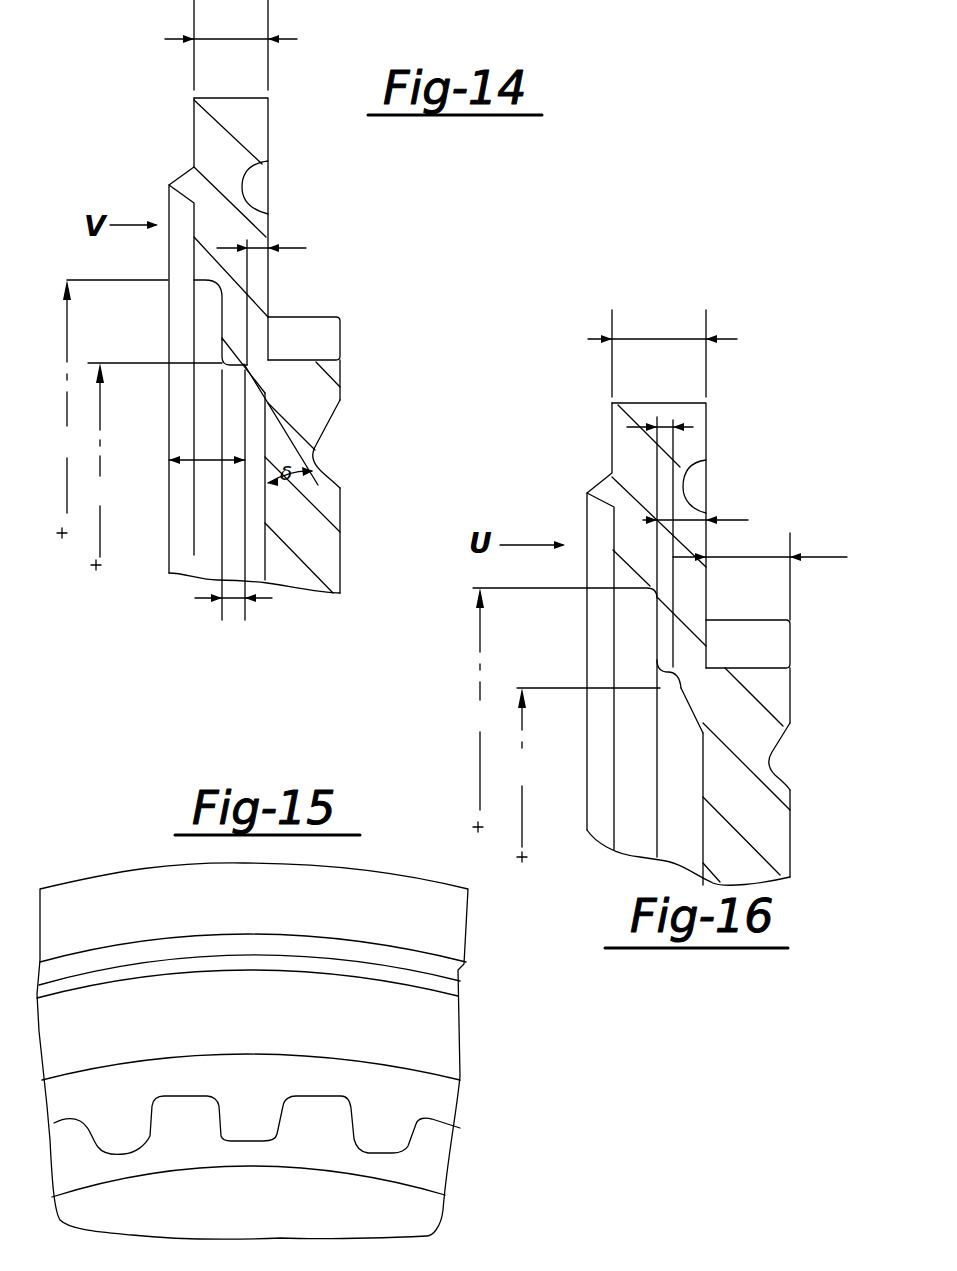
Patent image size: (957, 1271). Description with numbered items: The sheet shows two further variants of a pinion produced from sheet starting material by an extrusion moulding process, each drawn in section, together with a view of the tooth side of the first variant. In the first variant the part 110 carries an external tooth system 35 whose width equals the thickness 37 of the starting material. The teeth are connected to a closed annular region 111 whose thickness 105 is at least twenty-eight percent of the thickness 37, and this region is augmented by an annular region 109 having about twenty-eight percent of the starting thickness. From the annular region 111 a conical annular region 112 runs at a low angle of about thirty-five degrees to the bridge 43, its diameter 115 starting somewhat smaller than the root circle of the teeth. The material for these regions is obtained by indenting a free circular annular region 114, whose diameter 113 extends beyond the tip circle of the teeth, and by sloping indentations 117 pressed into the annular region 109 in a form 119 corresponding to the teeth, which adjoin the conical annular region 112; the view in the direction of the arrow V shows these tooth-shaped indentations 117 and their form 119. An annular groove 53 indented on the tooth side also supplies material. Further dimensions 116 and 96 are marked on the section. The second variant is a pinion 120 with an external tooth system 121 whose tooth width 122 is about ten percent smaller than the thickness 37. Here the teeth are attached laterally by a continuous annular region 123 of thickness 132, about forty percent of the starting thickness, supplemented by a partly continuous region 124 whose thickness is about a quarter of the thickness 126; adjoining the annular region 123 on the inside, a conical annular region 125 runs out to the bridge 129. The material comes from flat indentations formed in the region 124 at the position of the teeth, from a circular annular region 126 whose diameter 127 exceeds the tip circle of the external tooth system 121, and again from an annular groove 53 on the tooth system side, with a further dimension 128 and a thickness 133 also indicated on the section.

In FIG. 14, the starting material thickness 37 is at (218, 38).
In FIG. 16, the starting material thickness 37 is at (642, 338).
In FIG. 14, the annular region thickness 105 is at (267, 237).
In FIG. 14, the bearing race 110 is at (362, 493).
In FIG. 14, the external tooth system 35 is at (303, 327).
In FIG. 14, the annular groove 53 is at (327, 452).
In FIG. 16, the annular groove 53 is at (780, 760).
In FIG. 14, the bridge 43 is at (310, 542).
In FIG. 14, the closed annular region 111 is at (277, 316).
In FIG. 14, the conical annular region 112 is at (267, 367).
In FIG. 14, the free circular annular region 114 is at (210, 293).
In FIG. 14, the annular region 109 is at (235, 320).
In FIG. 14, the diameter of free annular region 113 is at (105, 409).
In FIG. 14, the diameter of conical annular region 115 is at (151, 466).
In FIG. 14, the width dimension 116 is at (204, 458).
In FIG. 14, the gap dimension 96 is at (232, 599).
In FIG. 15, the sloping indentations 117 is at (322, 1108).
In FIG. 15, the form corresponding to the teeth 119 is at (192, 1097).
In FIG. 16, the pinion 120 is at (814, 805).
In FIG. 16, the bridge 129 is at (733, 857).
In FIG. 16, the external tooth system 121 is at (758, 630).
In FIG. 16, the continuous annular region 123 is at (692, 655).
In FIG. 16, the partly continuous region 124 is at (665, 630).
In FIG. 16, the circular annular region 126 is at (628, 682).
In FIG. 16, the conical annular region 125 is at (693, 685).
In FIG. 16, the thickness of continuous annular region 132 is at (692, 512).
In FIG. 16, the wall thickness dimension 133 is at (663, 425).
In FIG. 16, the tooth width 122 is at (765, 557).
In FIG. 16, the diameter of circular annular region 127 is at (479, 710).
In FIG. 16, the height dimension 128 is at (583, 775).